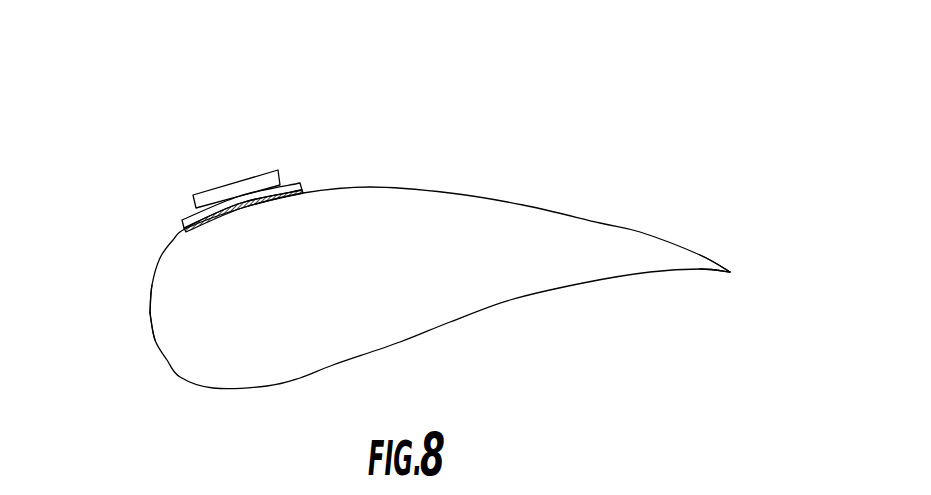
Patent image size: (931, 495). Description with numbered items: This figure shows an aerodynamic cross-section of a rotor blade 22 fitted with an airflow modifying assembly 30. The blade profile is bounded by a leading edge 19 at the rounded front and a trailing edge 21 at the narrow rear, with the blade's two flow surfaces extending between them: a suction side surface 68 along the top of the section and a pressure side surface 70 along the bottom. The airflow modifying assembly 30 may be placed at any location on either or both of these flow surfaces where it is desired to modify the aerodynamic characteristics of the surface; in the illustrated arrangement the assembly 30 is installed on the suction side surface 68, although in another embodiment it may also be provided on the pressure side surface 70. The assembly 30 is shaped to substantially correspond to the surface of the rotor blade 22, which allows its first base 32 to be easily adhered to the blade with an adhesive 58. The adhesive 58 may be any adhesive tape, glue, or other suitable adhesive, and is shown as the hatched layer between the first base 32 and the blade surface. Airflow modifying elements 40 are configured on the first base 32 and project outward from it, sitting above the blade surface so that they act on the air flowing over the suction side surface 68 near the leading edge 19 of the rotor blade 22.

The rotor blade 22 is at (436, 194).
The leading edge 19 is at (150, 310).
The trailing edge 21 is at (737, 272).
The suction side surface 68 is at (524, 206).
The pressure side surface 70 is at (508, 300).
The airflow modifying assembly 30 is at (248, 201).
The airflow modifying elements 40 is at (208, 195).
The first base 32 is at (305, 188).
The adhesive 58 is at (186, 230).